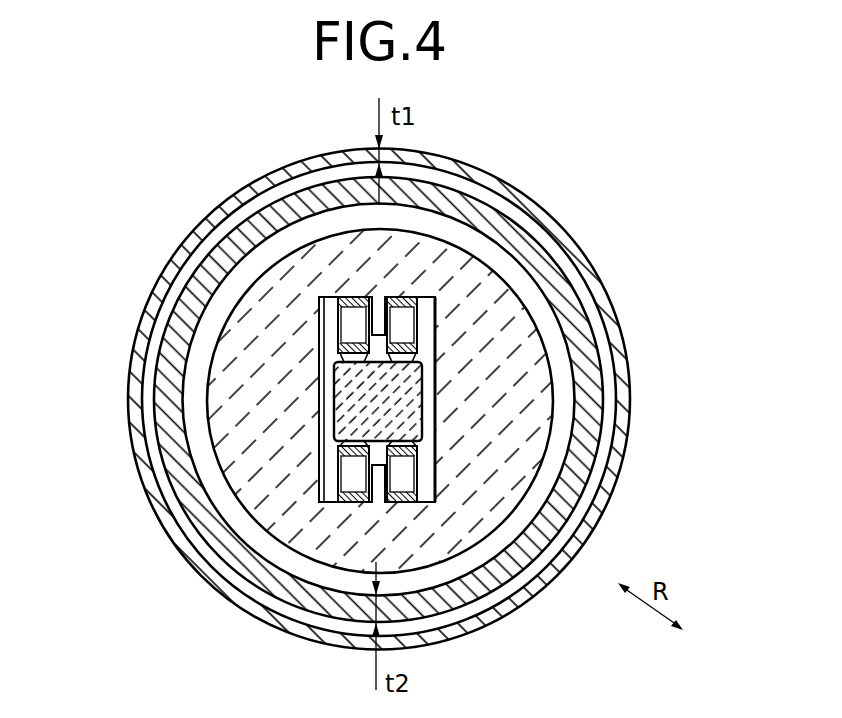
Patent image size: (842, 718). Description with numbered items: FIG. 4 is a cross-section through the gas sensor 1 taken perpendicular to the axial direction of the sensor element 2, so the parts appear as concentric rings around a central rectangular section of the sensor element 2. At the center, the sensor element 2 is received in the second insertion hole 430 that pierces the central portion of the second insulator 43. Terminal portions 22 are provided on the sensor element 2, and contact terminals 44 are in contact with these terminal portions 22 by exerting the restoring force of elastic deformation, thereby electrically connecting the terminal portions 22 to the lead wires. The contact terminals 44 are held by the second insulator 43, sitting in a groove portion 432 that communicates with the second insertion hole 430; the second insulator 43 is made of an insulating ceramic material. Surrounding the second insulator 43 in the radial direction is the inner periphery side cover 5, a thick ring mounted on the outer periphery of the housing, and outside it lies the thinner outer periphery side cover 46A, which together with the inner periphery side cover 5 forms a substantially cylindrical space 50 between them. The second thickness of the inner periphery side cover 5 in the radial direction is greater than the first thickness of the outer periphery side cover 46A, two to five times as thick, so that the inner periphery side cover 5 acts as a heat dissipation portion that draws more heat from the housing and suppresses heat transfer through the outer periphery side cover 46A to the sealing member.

The gas sensor 1 is at (583, 217).
The sensor element 2 is at (378, 405).
The terminal portions 22 is at (398, 355).
The second insulator 43 is at (337, 540).
The second insertion hole 430 is at (318, 395).
The groove portion 432 is at (333, 298).
The contact terminals 44 is at (405, 333).
The outer periphery side cover 46A is at (608, 497).
The inner periphery side cover 5 is at (190, 521).
The substantially cylindrical space 50 is at (152, 362).